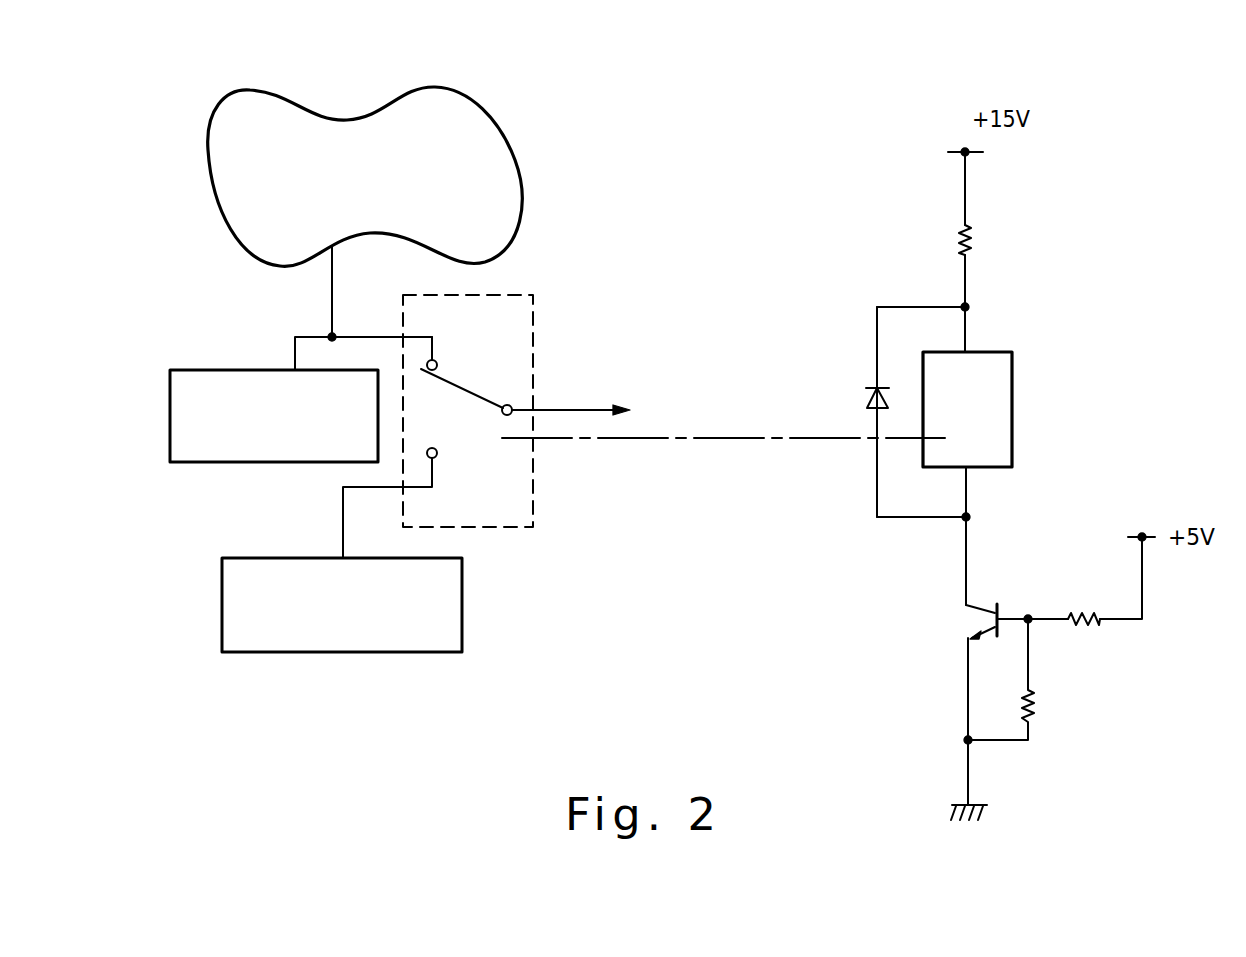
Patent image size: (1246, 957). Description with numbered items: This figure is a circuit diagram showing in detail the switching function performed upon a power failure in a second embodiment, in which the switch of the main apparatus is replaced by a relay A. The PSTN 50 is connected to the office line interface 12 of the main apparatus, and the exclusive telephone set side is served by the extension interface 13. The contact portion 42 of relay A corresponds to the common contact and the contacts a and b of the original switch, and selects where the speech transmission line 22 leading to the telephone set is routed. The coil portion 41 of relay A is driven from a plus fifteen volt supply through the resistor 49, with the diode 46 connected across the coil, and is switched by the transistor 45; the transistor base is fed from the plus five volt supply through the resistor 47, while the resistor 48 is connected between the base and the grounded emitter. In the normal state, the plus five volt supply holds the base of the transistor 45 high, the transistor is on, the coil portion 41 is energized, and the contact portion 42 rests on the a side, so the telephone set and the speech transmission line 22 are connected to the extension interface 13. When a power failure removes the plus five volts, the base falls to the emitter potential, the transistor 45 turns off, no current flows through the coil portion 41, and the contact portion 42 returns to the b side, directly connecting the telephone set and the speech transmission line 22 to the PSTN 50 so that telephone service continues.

The PSTN 50 is at (408, 97).
The office line interface 12 is at (238, 370).
The extension interface A 13 is at (222, 617).
The contact portion of relay A 42 is at (522, 337).
The speech transmission line 22 is at (553, 410).
The coil portion of relay A 41 is at (1012, 397).
The diode 46 is at (870, 388).
The resistor 49 is at (975, 238).
The transistor 45 is at (982, 607).
The resistor 47 is at (1083, 613).
The resistor 48 is at (1032, 693).